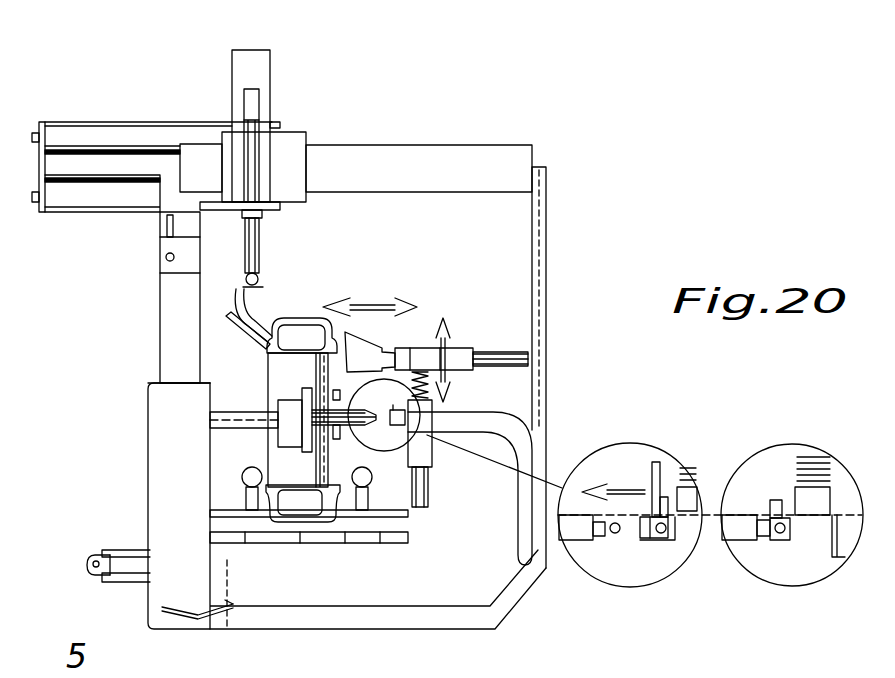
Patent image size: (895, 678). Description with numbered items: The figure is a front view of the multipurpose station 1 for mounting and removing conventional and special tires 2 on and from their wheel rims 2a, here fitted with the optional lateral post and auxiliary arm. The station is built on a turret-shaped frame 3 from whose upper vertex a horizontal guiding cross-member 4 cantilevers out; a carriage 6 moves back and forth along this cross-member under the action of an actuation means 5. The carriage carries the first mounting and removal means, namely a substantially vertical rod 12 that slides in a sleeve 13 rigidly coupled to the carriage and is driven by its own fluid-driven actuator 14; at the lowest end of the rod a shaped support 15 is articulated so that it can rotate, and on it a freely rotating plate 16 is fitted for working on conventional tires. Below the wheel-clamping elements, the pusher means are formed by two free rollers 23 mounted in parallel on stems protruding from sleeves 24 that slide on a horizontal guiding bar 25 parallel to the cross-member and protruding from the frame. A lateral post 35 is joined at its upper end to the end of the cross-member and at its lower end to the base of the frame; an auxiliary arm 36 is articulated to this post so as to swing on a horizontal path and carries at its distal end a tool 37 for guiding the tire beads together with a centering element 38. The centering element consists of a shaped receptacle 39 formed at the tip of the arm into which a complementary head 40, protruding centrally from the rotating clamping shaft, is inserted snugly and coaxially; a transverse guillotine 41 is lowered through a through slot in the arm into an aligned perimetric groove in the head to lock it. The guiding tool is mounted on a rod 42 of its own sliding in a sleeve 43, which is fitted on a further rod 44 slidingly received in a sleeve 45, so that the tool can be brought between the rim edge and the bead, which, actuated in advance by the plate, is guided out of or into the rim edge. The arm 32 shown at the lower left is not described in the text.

The multipurpose station 1 is at (620, 147).
The tire 2 is at (299, 318).
The wheel rim 2a is at (287, 378).
The turret-shaped frame 3 is at (160, 408).
The horizontal guiding cross-member 4 is at (385, 165).
The actuation means 5 is at (98, 117).
The carriage 6 is at (296, 160).
The vertical rod 12 is at (250, 98).
The sleeve 13 is at (248, 166).
The fluid-driven actuator 14 is at (272, 66).
The shaped support 15 is at (237, 298).
The freely rotating plate 16 is at (253, 332).
The free rollers 23 is at (247, 490).
The sleeve 24 is at (247, 537).
The horizontal guiding bar 25 is at (292, 538).
The bead breaker arm 32 is at (105, 550).
The lateral post 35 is at (534, 254).
The auxiliary arm 36 is at (497, 427).
The guiding tool 37 is at (385, 340).
The centering element 38 is at (390, 436).
The shaped receptacle 39 is at (655, 520).
The head 40 is at (614, 535).
The transverse guillotine 41 is at (663, 470).
The rod 42 is at (503, 357).
The sleeve 43 is at (659, 548).
The further rod 44 is at (430, 502).
The sleeve 45 is at (428, 447).